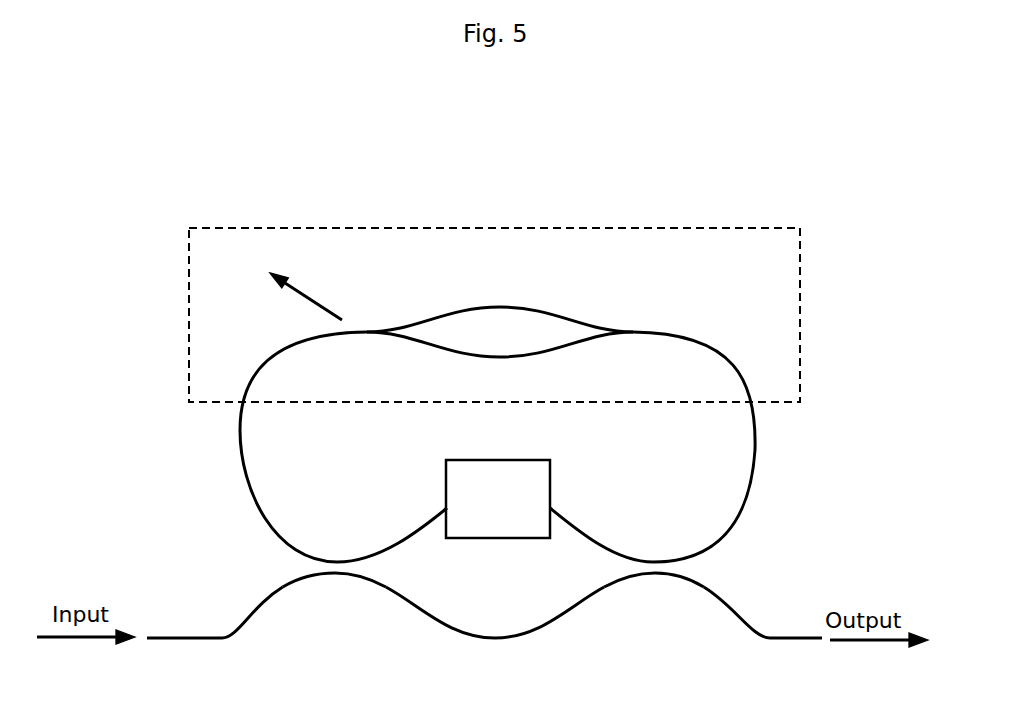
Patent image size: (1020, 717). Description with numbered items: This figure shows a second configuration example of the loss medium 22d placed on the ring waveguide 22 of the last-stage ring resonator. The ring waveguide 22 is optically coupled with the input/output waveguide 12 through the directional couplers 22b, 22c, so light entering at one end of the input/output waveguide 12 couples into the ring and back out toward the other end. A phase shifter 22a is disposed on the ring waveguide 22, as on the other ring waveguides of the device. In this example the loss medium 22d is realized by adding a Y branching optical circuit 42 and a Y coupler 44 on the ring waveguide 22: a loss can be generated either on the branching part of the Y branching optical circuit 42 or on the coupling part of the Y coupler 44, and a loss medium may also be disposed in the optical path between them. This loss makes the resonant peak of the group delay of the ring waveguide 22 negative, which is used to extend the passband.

The input/output waveguide 12 is at (484, 640).
The ring waveguide 22 is at (508, 395).
The phase shifter 22a is at (540, 487).
The directional coupler 22b is at (340, 569).
The directional coupler 22c is at (655, 569).
The loss medium 22d is at (494, 315).
The Y branching optical circuit 42 is at (633, 331).
The Y coupler 44 is at (367, 331).